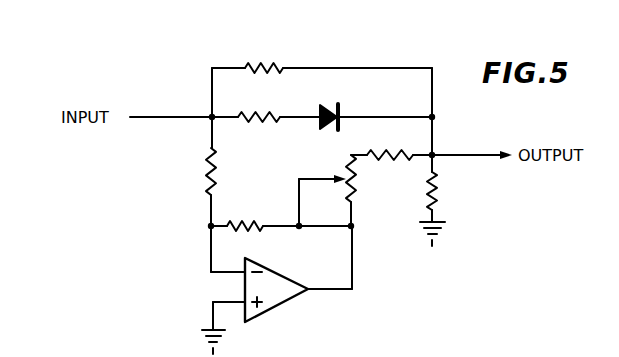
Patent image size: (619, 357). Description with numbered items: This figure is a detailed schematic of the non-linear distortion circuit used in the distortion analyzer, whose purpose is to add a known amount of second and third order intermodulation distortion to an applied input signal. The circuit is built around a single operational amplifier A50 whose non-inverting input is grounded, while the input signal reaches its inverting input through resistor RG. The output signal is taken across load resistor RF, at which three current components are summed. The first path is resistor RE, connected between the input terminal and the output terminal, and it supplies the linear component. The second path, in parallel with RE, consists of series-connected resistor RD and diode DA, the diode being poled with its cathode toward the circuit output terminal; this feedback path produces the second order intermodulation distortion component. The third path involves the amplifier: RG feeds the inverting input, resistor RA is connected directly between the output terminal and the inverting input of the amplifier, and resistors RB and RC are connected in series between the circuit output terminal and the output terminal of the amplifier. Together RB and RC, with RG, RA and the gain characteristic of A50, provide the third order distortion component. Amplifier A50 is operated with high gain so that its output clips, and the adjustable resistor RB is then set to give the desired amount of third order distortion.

The resistor RE is at (274, 66).
The resistor RD is at (264, 110).
The diode DA is at (333, 100).
The resistor RC is at (381, 148).
The resistor RG is at (203, 162).
The resistor RA is at (268, 221).
The resistor RB is at (358, 189).
The load resistor RF is at (445, 192).
The operational amplifier A50 is at (285, 299).